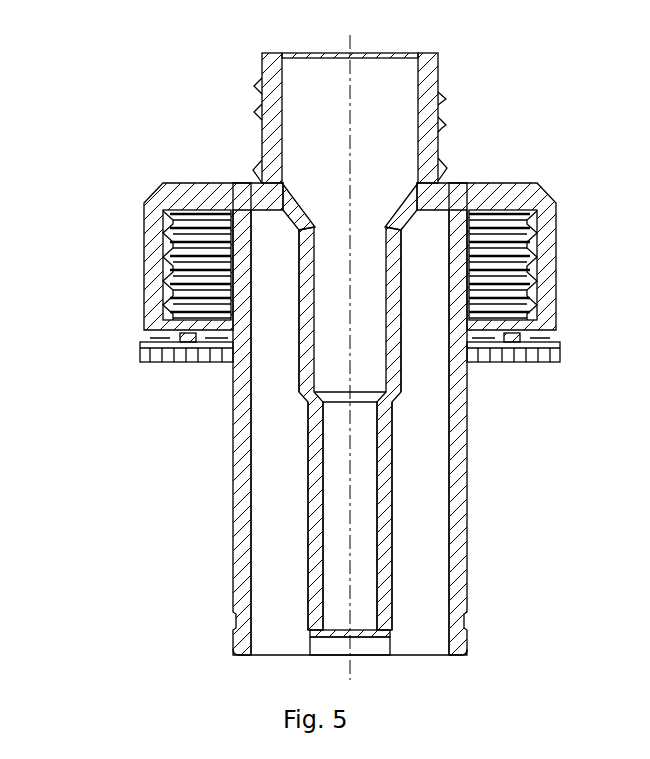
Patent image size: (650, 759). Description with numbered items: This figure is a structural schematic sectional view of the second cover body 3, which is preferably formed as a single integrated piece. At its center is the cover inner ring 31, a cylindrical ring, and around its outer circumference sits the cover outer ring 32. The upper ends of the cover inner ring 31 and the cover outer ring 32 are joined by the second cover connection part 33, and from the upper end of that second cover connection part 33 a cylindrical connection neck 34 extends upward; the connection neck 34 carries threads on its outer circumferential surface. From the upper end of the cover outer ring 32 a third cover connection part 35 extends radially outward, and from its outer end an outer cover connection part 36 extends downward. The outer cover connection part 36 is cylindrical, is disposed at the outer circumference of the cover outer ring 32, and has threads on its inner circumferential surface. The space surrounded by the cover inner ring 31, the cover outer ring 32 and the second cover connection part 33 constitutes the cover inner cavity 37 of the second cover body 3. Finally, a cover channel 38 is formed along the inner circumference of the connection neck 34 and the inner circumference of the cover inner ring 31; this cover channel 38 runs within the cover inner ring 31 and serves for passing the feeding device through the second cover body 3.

The second cover body 3 is at (193, 110).
The cover inner ring 31 is at (392, 337).
The cover outer ring 32 is at (453, 442).
The second cover connection part 33 is at (430, 187).
The connection neck 34 is at (445, 100).
The third cover connection part 35 is at (203, 200).
The outer cover connection part 36 is at (153, 265).
The cover inner cavity 37 is at (423, 515).
The cover channel 38 is at (360, 552).